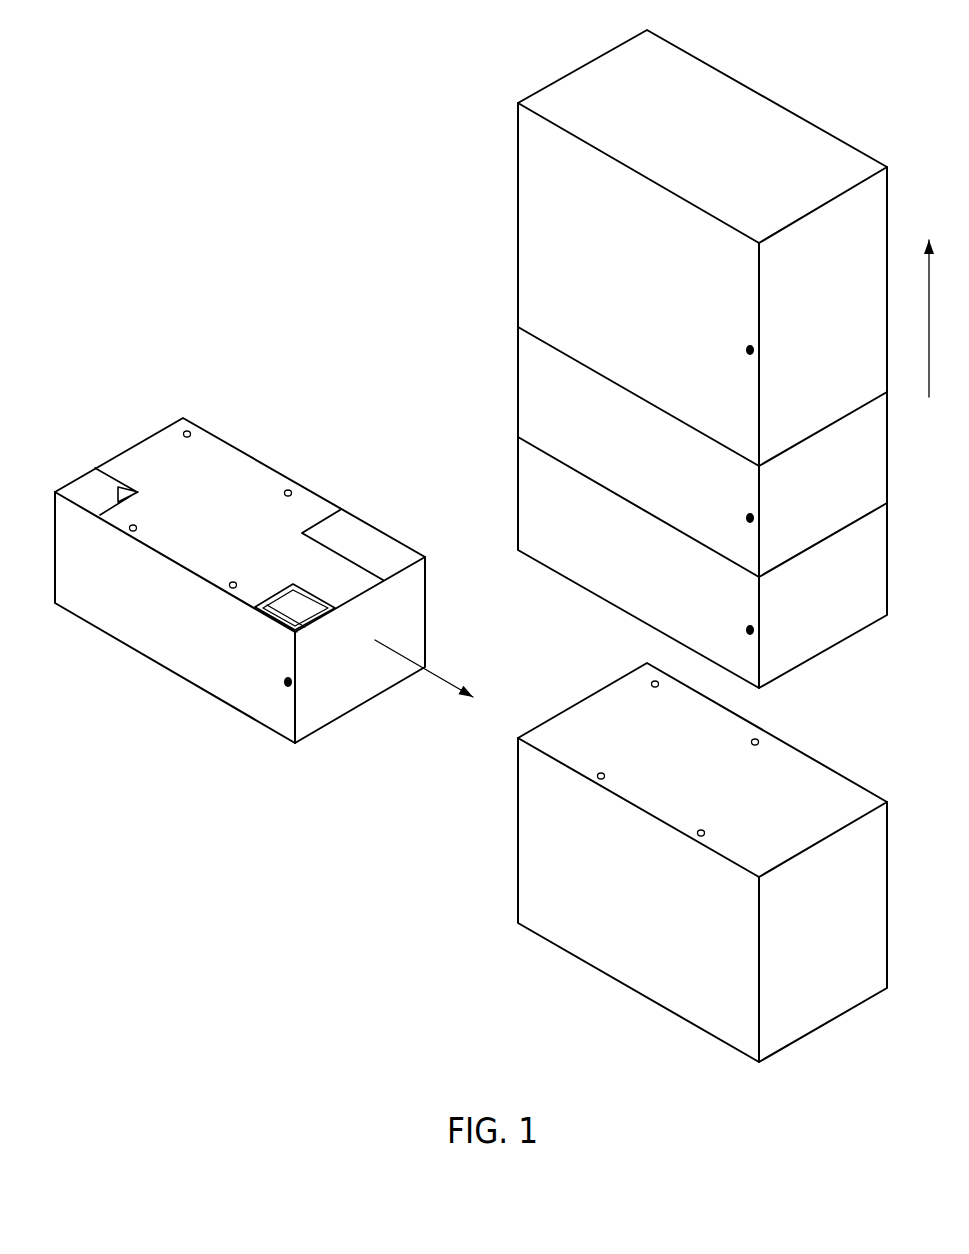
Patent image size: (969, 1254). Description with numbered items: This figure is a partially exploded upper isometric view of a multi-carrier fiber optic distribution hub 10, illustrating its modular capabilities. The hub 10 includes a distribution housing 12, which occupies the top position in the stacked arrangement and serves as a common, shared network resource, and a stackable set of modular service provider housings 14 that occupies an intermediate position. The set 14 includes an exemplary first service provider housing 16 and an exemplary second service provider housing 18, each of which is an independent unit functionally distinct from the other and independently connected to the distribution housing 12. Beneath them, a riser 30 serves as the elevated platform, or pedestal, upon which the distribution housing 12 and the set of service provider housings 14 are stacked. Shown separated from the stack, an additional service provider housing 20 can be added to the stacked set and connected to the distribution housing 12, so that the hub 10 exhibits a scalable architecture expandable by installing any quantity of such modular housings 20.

The multi-carrier fiber optic distribution hub 10 is at (227, 185).
The distribution housing 12 is at (636, 359).
The stackable set of modular service provider housings 14 is at (490, 312).
The first service provider housing 16 is at (702, 425).
The second service provider housing 18 is at (702, 536).
The additional service provider housing 20 is at (115, 410).
The riser 30 is at (503, 838).